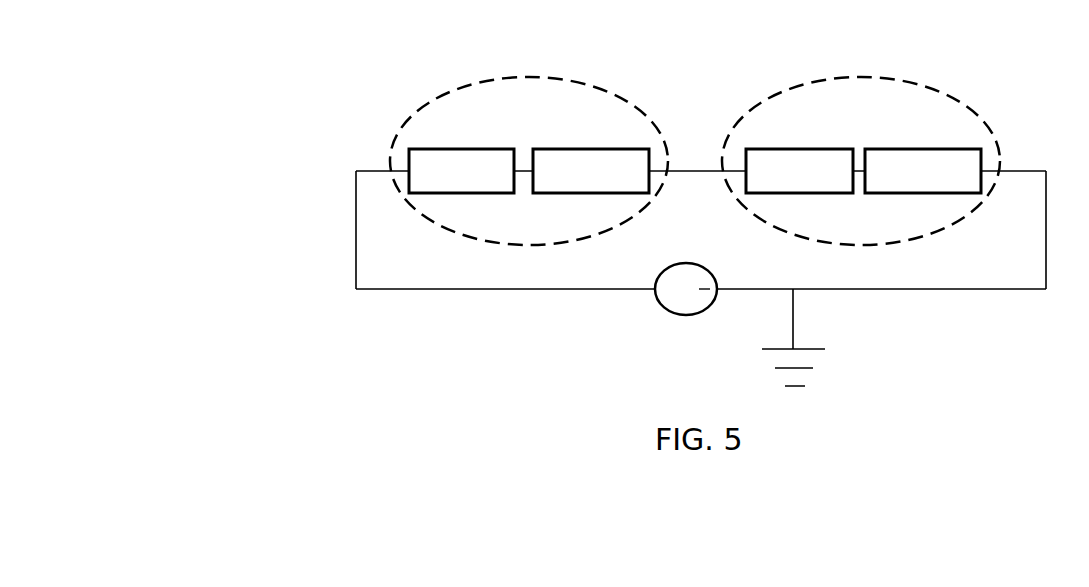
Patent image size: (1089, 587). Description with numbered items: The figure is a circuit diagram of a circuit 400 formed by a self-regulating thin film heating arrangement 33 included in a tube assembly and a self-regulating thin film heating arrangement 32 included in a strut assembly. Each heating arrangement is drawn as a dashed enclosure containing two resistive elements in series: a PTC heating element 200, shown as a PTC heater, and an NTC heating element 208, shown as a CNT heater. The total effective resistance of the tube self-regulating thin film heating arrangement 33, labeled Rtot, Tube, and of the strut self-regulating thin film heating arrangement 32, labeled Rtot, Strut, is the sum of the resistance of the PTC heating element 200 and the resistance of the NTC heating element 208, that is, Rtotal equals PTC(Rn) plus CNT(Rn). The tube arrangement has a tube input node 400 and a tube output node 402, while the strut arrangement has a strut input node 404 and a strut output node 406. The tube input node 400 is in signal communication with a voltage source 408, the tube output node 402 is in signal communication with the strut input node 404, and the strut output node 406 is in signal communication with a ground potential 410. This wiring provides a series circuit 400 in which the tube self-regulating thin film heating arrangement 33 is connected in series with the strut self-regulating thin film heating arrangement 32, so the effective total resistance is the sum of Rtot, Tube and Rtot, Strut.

The circuit 400 is at (295, 114).
The tube self-regulating thin film heating arrangement 33 is at (411, 99).
The strut self-regulating thin film heating arrangement 32 is at (748, 100).
The PTC heating element 200 is at (450, 149).
The NTC heating element 208 is at (573, 149).
The tube output node 402 is at (658, 177).
The strut input node 404 is at (708, 172).
The strut output node 406 is at (992, 177).
The voltage source 408 is at (657, 303).
The ground potential 410 is at (795, 319).